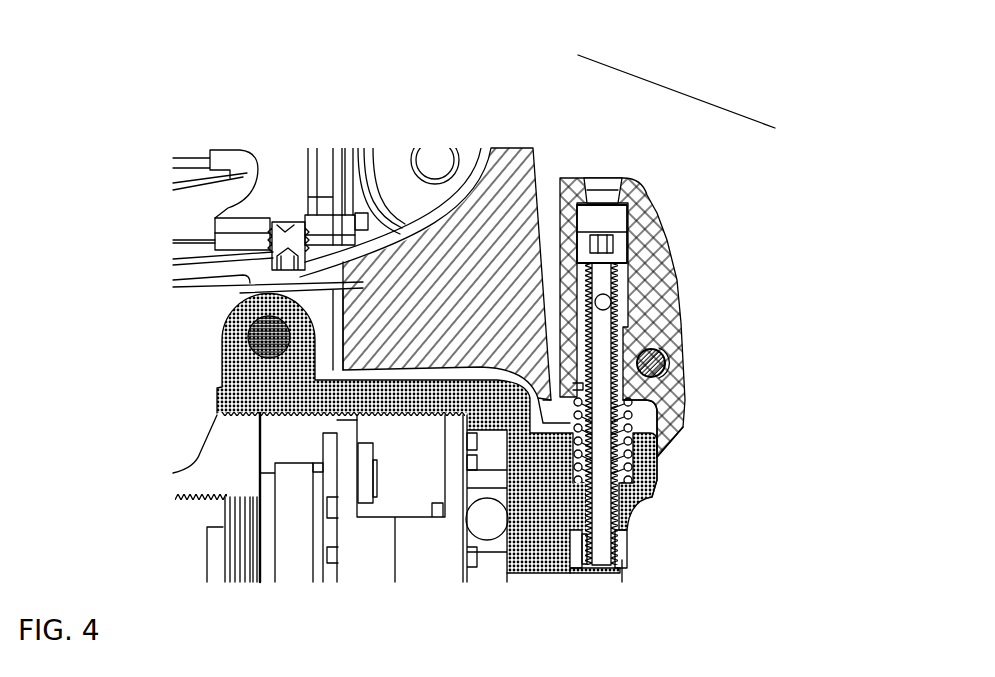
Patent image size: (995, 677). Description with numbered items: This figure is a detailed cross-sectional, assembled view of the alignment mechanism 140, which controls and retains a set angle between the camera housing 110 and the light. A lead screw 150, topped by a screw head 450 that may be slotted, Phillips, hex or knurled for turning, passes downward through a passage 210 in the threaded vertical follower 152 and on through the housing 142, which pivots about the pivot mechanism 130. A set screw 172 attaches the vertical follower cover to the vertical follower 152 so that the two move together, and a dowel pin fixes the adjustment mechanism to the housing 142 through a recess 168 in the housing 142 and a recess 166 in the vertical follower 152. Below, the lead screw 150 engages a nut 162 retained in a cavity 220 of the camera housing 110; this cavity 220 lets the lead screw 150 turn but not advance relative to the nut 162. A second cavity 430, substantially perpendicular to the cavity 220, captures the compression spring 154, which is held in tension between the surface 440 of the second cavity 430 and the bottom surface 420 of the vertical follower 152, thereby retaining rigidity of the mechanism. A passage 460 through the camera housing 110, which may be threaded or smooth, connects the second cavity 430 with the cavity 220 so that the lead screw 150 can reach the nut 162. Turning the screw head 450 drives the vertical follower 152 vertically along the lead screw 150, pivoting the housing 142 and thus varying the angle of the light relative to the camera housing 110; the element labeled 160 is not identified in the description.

The camera housing 110 is at (162, 515).
The pivot mechanism 130 is at (250, 338).
The alignment mechanism 140 is at (707, 98).
The housing 142 is at (533, 178).
The lead screw 150 is at (627, 250).
The vertical follower 152 is at (662, 408).
The spring 154 is at (637, 483).
The retaining washer 160 is at (576, 533).
The nut 162 is at (632, 552).
The recess 166 is at (663, 357).
The recess 168 is at (665, 370).
The set screw 172 is at (625, 278).
The passage 210 is at (612, 304).
The cavity 220 is at (622, 560).
The bottom surface 420 is at (665, 388).
The second cavity 430 is at (657, 458).
The surface 440 is at (628, 490).
The screw head 450 is at (607, 178).
The passage 460 is at (574, 536).